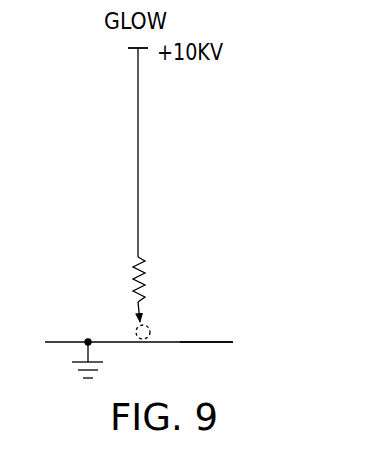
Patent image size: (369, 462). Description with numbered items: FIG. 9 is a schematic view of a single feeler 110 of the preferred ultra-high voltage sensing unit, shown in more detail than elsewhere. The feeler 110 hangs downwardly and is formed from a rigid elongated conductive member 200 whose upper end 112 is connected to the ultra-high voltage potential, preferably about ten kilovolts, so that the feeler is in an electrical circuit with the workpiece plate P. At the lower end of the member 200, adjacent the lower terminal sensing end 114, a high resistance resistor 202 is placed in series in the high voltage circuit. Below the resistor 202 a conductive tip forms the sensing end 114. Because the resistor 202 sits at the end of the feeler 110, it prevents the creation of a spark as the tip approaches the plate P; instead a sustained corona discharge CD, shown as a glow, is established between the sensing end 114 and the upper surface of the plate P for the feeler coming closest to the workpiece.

The upper end 112 is at (132, 55).
The elongated conductive member 200 is at (138, 152).
The feeler 110 is at (136, 180).
The high resistance resistor 202 is at (140, 270).
The lower terminal sensing end 114 is at (149, 319).
The discharge CD is at (132, 331).
The plate P is at (218, 337).